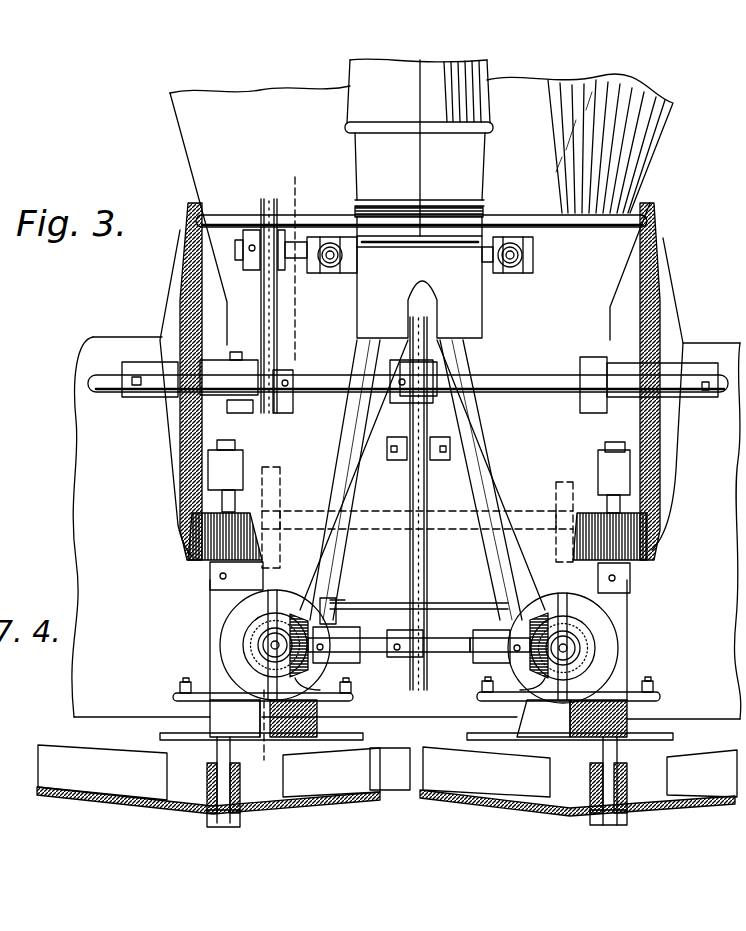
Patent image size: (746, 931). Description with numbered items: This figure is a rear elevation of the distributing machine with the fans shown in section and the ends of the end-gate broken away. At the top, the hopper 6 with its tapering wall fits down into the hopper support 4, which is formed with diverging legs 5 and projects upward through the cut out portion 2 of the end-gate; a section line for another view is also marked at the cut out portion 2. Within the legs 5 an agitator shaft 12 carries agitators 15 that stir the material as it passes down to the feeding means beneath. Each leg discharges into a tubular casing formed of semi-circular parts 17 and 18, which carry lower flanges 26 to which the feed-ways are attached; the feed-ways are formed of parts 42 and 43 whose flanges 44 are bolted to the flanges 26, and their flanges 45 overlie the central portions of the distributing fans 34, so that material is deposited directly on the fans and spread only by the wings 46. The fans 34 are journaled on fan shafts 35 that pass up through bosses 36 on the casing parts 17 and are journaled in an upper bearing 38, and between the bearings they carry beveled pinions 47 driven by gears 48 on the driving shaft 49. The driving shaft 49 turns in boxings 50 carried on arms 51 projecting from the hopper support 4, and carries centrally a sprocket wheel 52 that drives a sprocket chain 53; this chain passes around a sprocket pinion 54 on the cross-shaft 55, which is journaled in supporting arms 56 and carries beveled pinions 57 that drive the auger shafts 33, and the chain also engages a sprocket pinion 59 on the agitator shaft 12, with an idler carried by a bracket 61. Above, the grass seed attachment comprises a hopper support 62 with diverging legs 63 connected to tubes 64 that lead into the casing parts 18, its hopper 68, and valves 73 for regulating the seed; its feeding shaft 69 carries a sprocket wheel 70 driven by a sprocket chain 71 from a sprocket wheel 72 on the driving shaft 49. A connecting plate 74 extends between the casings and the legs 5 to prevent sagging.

The cut out portion 2 is at (279, 470).
The hopper support 4 is at (406, 402).
The diverging legs 5 is at (418, 537).
The hopper 6 is at (580, 143).
The agitator shaft 12 is at (292, 512).
The agitators 15 is at (281, 474).
The semi-circular part 17 is at (228, 648).
The semi-circular part 18 is at (320, 672).
The flanges 26 is at (180, 690).
The auger shafts 33 is at (258, 640).
The distributing fans 34 is at (175, 808).
The fan shafts 35 is at (242, 822).
The bosses 36 is at (215, 600).
The bearing 38 is at (245, 462).
The feed-way part 42 is at (390, 718).
The feed-way part 43 is at (448, 718).
The flanges 44 is at (190, 702).
The flanges 45 is at (208, 748).
The wings 46 is at (387, 772).
The beveled pinions 47 is at (215, 548).
The gears 48 is at (186, 428).
The driving shaft 49 is at (118, 386).
The boxings 50 is at (246, 386).
The arms 51 is at (235, 352).
The sprocket wheel 52 is at (420, 396).
The sprocket chain 53 is at (430, 572).
The sprocket pinion 54 is at (421, 660).
The cross-shaft 55 is at (430, 640).
The supporting arms 56 is at (419, 645).
The beveled pinions 57 is at (340, 600).
The sprocket pinion 59 is at (338, 570).
The bracket 61 is at (432, 468).
The hopper support 62 is at (420, 235).
The diverging legs 63 is at (422, 467).
The tubes 64 is at (414, 381).
The hopper 68 is at (419, 147).
The shaft 69 is at (299, 246).
The sprocket wheel 70 is at (260, 218).
The sprocket chain 71 is at (276, 312).
The sprocket wheel 72 is at (266, 413).
The valves 73 is at (493, 270).
The connecting plate 74 is at (440, 612).